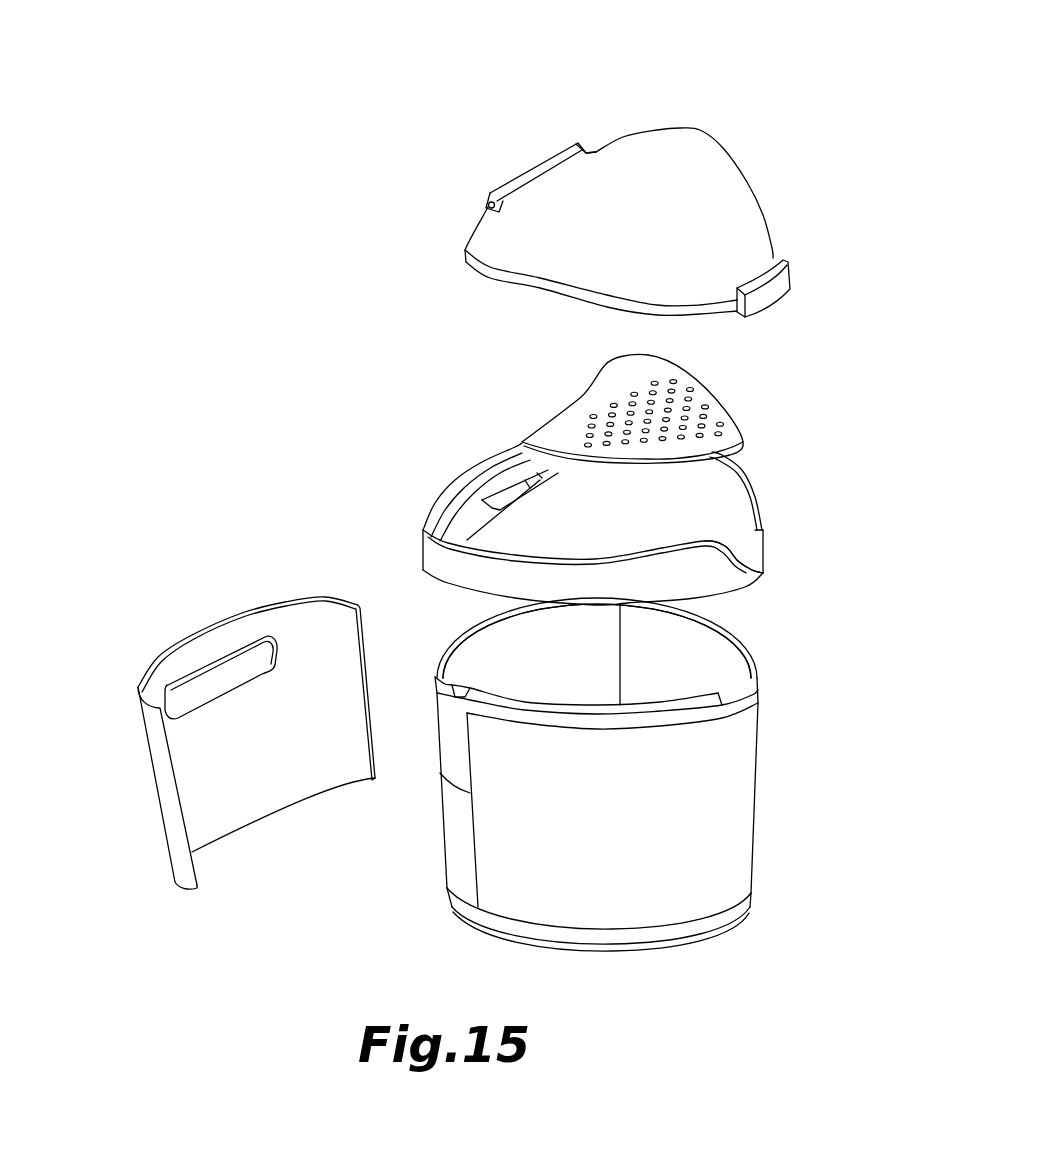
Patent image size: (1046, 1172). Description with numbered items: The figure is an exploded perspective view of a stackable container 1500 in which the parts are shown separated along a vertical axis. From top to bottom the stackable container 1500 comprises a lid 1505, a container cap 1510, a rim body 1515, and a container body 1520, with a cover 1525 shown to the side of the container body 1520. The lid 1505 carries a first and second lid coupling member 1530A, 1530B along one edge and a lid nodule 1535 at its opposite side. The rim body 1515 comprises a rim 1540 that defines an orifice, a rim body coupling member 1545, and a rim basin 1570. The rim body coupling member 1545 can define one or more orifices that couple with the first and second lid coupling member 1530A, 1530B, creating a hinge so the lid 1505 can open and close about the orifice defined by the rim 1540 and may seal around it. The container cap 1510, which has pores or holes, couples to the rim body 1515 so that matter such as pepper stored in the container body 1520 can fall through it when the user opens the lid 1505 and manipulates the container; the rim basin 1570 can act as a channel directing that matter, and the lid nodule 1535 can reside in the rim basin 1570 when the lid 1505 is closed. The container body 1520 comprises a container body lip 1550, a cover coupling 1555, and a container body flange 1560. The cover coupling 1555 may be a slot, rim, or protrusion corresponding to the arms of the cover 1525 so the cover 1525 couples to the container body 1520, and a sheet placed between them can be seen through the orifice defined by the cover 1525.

The stackable container 1500 is at (172, 97).
The lid 1505 is at (768, 92).
The container cap 1510 is at (750, 392).
The rim body 1515 is at (797, 486).
The container body 1520 is at (797, 741).
The cover 1525 is at (201, 583).
The first lid coupling member 1530A is at (487, 204).
The second lid coupling member 1530B is at (598, 149).
The lid nodule 1535 is at (793, 267).
The rim 1540 is at (480, 457).
The rim body coupling member 1545 is at (544, 480).
The container body lip 1550 is at (448, 640).
The cover coupling 1555 is at (474, 830).
The container body flange 1560 is at (457, 923).
The rim basin 1570 is at (770, 560).